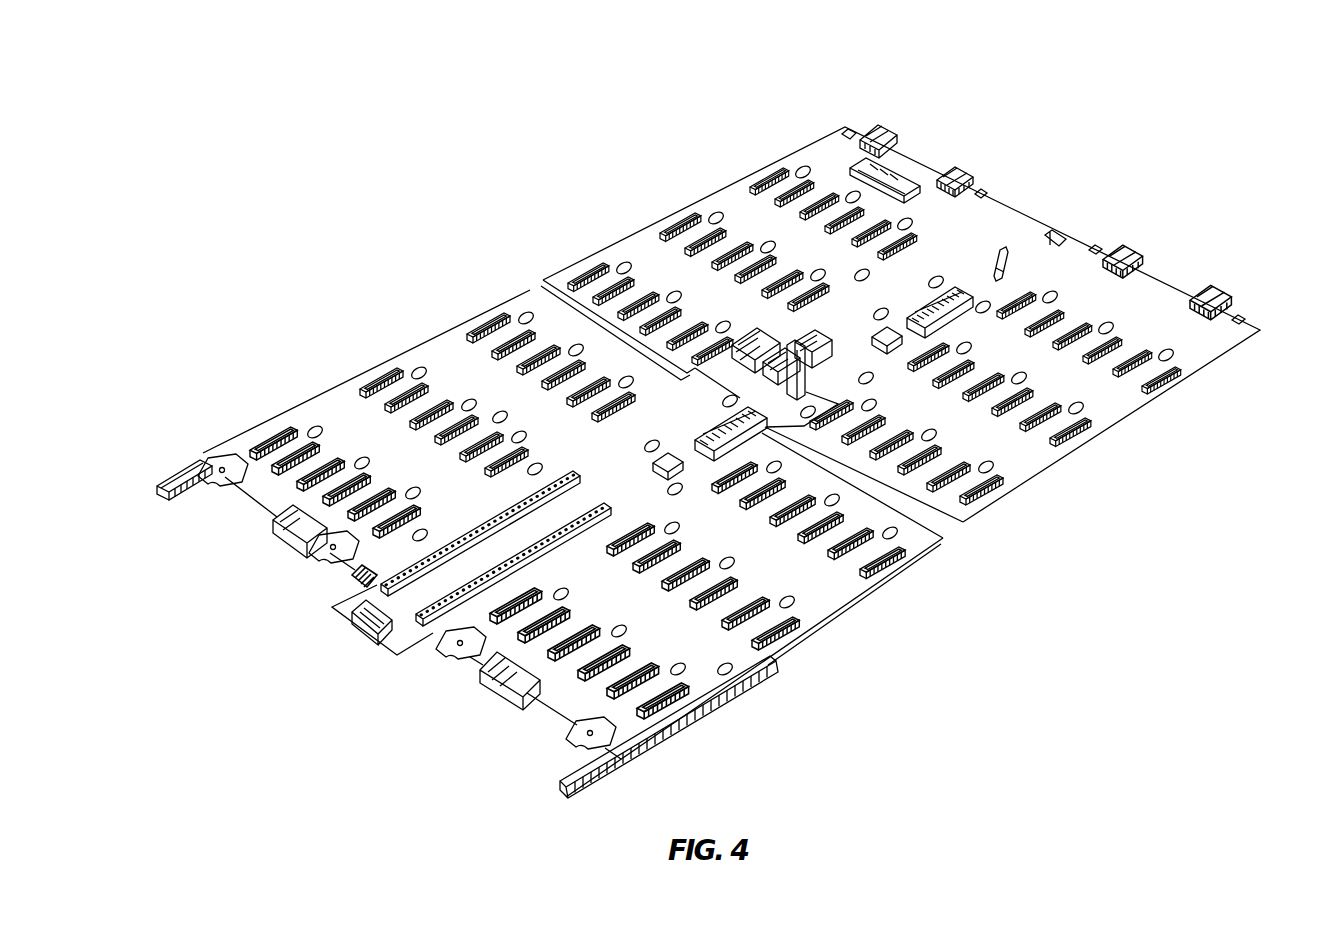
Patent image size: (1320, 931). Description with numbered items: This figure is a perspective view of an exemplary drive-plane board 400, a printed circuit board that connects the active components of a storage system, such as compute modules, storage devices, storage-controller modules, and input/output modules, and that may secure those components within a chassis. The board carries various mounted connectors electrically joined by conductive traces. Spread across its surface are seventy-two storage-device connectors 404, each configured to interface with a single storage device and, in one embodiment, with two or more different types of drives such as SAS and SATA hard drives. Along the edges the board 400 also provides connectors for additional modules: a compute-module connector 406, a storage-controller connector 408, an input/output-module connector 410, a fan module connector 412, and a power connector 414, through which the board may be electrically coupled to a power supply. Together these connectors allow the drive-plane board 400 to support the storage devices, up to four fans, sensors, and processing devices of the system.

The drive-plane board 400 is at (195, 140).
The storage-device connector 404 is at (383, 375).
The compute-module connector 406 is at (380, 582).
The storage-controller connector 408 is at (1028, 573).
The input/output-module connector 410 is at (490, 687).
The fan module connector 412 is at (957, 165).
The power connector 414 is at (882, 178).